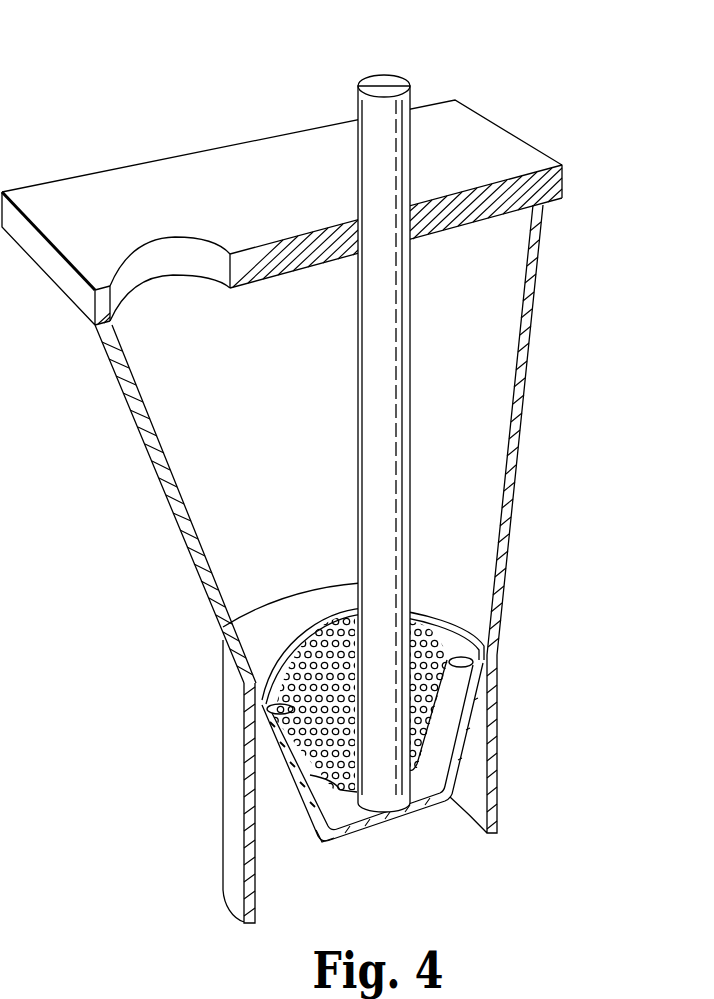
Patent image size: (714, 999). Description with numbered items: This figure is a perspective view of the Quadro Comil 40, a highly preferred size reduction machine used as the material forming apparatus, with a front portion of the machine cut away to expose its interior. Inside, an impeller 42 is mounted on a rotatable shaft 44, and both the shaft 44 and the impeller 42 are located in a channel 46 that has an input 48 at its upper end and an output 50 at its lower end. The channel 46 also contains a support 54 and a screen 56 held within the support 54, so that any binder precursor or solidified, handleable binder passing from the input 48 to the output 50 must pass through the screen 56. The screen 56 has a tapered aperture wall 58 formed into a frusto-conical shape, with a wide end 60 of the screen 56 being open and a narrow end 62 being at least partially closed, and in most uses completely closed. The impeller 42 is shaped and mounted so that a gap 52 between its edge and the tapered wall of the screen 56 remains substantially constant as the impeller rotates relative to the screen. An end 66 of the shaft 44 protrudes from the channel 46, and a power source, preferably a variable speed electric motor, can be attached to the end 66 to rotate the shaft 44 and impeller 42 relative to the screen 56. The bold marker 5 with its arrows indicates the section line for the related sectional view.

The Quadro Comil size reduction machine 40 is at (302, 483).
The impeller 42 is at (433, 770).
The rotatable shaft 44 is at (223, 627).
The channel 46 is at (193, 478).
The input 48 is at (135, 270).
The output 50 is at (266, 900).
The gap 52 is at (310, 750).
The support 54 is at (514, 650).
The screen 56 is at (260, 700).
The tapered aperture wall 58 is at (326, 840).
The wide end 60 is at (452, 645).
The narrow end 62 is at (418, 805).
The end of the shaft 66 is at (384, 80).
The section line for FIG. 5 is at (278, 695).